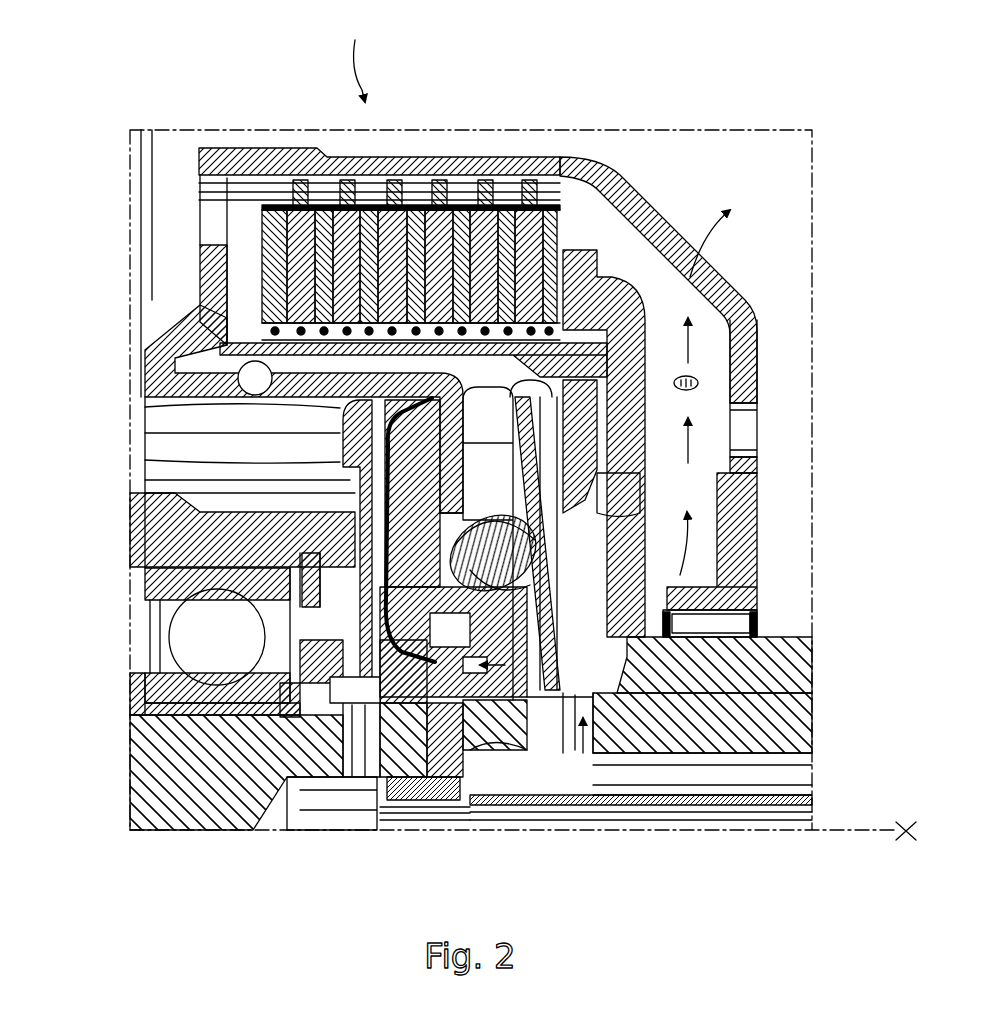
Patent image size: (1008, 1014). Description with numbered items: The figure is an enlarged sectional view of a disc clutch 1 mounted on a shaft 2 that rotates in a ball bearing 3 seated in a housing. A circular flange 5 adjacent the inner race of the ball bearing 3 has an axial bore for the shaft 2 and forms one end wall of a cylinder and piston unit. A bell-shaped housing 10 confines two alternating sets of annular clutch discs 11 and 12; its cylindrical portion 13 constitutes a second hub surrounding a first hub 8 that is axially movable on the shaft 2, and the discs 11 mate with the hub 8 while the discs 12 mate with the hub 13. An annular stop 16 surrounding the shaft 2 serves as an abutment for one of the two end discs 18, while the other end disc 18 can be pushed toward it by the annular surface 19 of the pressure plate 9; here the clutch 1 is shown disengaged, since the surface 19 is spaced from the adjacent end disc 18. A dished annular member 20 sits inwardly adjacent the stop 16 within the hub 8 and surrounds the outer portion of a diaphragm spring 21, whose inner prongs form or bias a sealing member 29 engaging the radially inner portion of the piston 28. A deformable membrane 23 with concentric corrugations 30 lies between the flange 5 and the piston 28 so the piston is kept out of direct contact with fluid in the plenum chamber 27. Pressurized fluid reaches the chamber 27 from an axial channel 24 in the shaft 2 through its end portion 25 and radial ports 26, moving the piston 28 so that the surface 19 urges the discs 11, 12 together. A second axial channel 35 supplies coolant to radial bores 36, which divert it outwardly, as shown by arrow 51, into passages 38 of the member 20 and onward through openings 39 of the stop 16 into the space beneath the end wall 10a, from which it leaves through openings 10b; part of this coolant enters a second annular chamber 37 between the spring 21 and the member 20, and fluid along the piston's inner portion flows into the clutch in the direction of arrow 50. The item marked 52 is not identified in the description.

The disc clutch 1 is at (356, 57).
The shaft 2 is at (175, 825).
The ball bearing 3 is at (165, 592).
The circular flange 5 is at (165, 425).
The first hub 8 is at (745, 370).
The pressure plate 9 is at (170, 345).
The bell-shaped housing 10 is at (610, 172).
The end wall of housing 10a is at (758, 395).
The openings in housing 10b is at (735, 300).
The clutch discs 11 is at (420, 212).
The clutch discs 12 is at (475, 212).
The cylindrical portion of housing 13 is at (540, 212).
The annular stop 16 is at (625, 310).
The end discs 18 is at (275, 210).
The annular surface 19 is at (215, 238).
The dished annular member 20 is at (757, 470).
The diaphragm spring 21 is at (757, 570).
The deformable membrane 23 is at (168, 688).
The axial channel 24 is at (800, 815).
The end portion of axial channel 25 is at (312, 822).
The radial ports 26 is at (372, 760).
The plenum chamber 27 is at (285, 640).
The piston 28 is at (185, 527).
The sealing member 29 is at (760, 618).
The concentric corrugations 30 is at (355, 455).
The second axial channel 35 is at (795, 780).
The radial bores 36 is at (568, 735).
The second annular chamber 37 is at (660, 565).
The passages 38 is at (735, 688).
The axially parallel openings 39 is at (640, 548).
The arrow 50 is at (545, 760).
The arrow 51 is at (583, 825).
The sleeve 52 is at (455, 785).